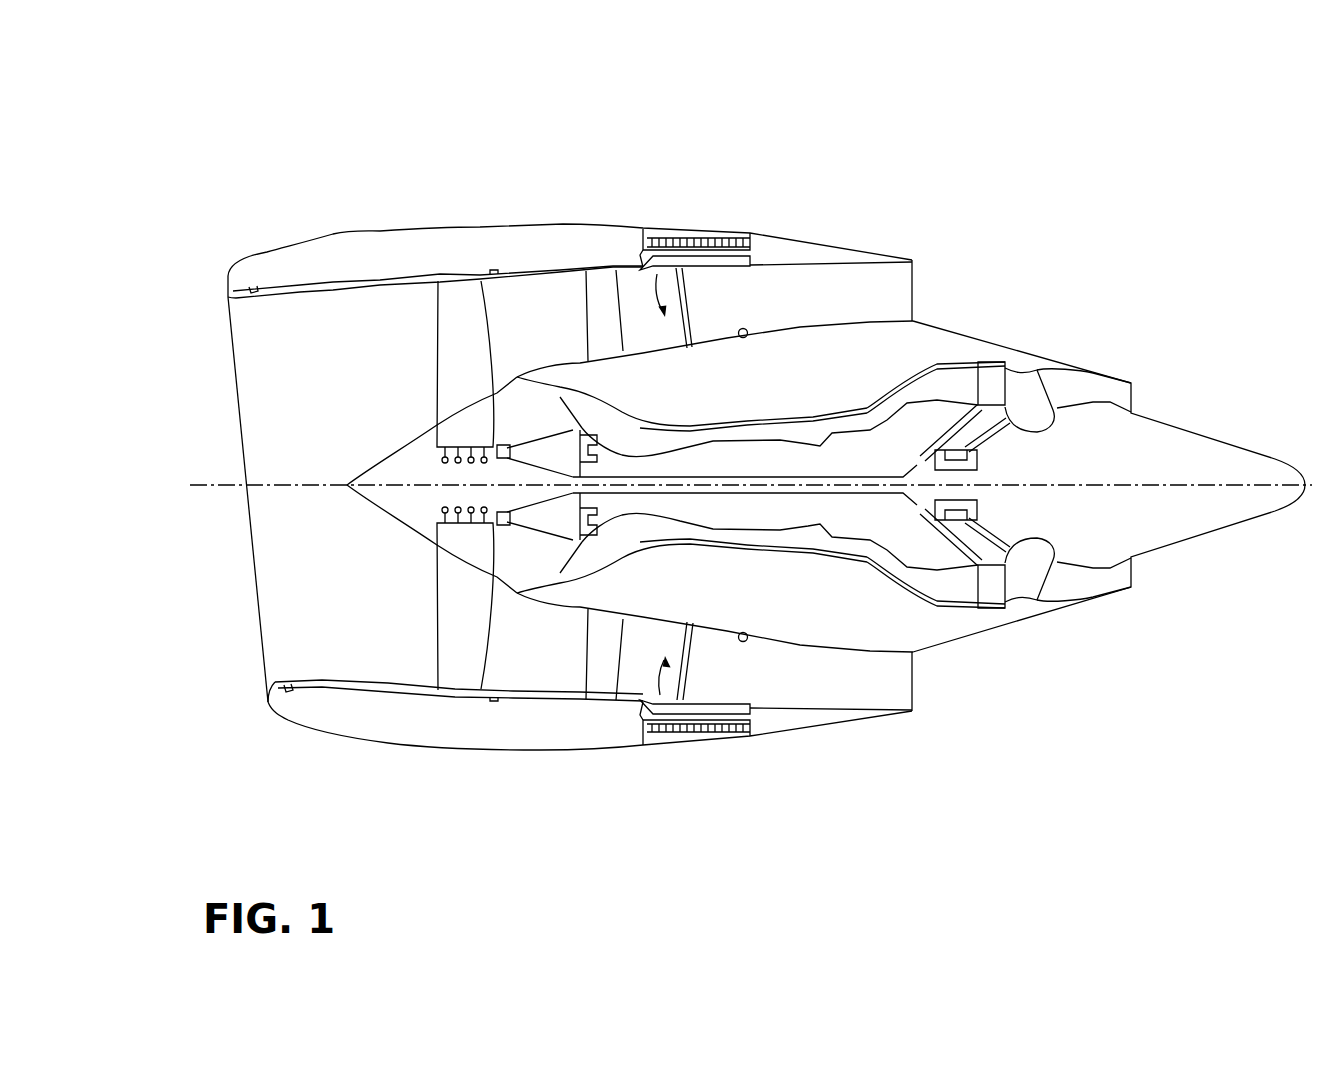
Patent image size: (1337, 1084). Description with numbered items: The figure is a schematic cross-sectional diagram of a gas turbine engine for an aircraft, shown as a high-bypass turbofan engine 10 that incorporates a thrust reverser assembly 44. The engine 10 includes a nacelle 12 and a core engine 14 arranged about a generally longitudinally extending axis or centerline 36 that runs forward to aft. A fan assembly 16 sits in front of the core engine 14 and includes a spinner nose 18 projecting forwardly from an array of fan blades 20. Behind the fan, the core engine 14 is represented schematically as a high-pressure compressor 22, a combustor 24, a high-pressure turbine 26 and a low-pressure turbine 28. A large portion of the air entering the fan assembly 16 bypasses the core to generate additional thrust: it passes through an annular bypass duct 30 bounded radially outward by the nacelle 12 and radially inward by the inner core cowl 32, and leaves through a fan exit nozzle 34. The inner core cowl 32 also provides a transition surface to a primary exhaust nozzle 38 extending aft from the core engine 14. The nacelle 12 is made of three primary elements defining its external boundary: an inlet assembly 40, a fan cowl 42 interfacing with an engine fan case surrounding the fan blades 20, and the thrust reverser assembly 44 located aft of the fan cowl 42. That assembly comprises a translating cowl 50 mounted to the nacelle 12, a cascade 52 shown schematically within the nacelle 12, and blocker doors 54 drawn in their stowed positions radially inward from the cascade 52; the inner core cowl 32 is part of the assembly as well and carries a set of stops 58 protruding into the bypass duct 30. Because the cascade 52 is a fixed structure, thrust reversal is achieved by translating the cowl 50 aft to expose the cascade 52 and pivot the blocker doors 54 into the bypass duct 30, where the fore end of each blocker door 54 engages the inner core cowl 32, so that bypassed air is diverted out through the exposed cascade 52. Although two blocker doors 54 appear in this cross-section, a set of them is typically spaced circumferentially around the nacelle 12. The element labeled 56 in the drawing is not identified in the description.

The high-bypass turbofan engine 10 is at (972, 158).
The nacelle 12 is at (447, 172).
The core engine 14 is at (950, 623).
The fan assembly 16 is at (347, 623).
The spinner nose 18 is at (390, 508).
The fan blades 20 is at (453, 337).
The high-pressure compressor 22 is at (643, 440).
The combustor 24 is at (813, 440).
The high-pressure turbine 26 is at (872, 550).
The low-pressure turbine 28 is at (947, 380).
The bypass duct 30 is at (518, 331).
The inner core cowl 32 is at (807, 320).
The fan exit nozzle 34 is at (942, 282).
The centerline 36 is at (222, 487).
The primary exhaust nozzle 38 is at (1074, 364).
The inlet assembly 40 is at (330, 233).
The fan cowl 42 is at (553, 222).
The thrust reverser assembly 44 is at (663, 198).
The translating cowl 50 is at (823, 243).
The cascade 52 is at (730, 237).
The blocker doors 54 is at (692, 253).
The strut / outlet guide vane 56 is at (686, 322).
The stops 58 is at (746, 330).